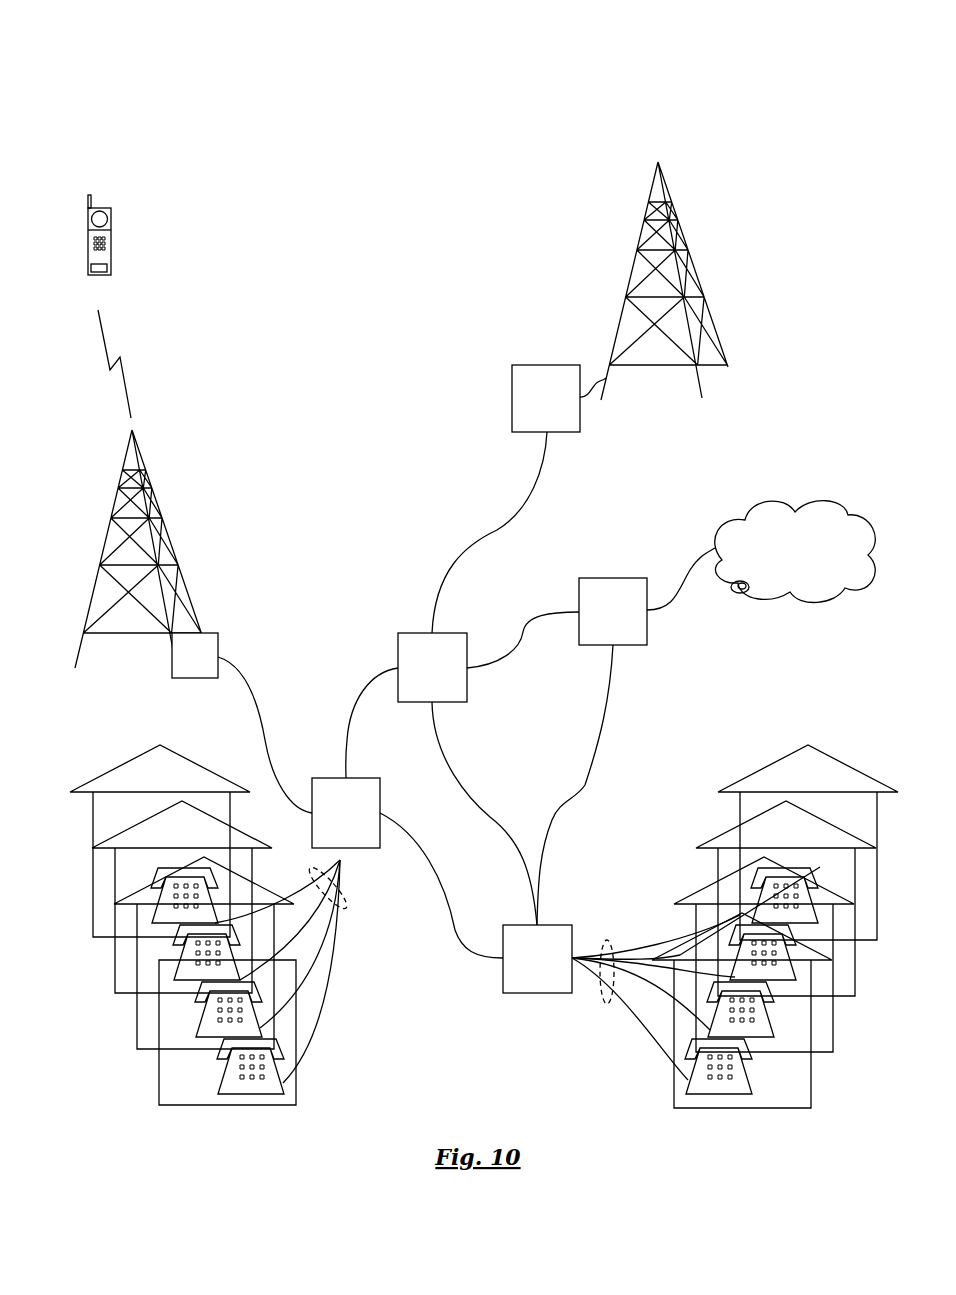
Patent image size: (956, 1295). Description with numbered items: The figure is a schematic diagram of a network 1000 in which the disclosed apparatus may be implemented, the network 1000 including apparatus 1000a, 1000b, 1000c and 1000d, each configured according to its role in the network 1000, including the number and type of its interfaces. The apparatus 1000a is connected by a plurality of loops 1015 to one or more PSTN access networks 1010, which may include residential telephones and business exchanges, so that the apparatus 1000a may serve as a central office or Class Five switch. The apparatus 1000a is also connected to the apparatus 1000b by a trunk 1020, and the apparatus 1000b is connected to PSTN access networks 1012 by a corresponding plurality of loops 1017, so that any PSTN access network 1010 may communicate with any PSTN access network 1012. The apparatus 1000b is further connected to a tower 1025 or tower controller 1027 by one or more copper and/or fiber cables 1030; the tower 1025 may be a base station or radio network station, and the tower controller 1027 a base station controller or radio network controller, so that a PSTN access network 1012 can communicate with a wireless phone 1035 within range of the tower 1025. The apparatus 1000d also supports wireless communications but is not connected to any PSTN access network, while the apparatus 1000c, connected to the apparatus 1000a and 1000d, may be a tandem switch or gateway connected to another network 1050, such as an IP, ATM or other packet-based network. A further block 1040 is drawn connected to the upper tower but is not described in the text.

The network 1000 is at (803, 62).
The wireless phone 1035 is at (112, 251).
The tower 1025 is at (100, 465).
The tower controller 1027 is at (603, 276).
The gateway node 1040 is at (559, 398).
The apparatus 1000a is at (537, 959).
The apparatus 1000b is at (407, 868).
The apparatus 1000c is at (626, 736).
The apparatus 1000d is at (462, 678).
The network 1050 is at (795, 552).
The PSTN access network 1010 is at (895, 927).
The PSTN access network 1012 is at (180, 1120).
The loops 1015 is at (608, 940).
The loops 1017 is at (345, 915).
The trunk 1020 is at (462, 938).
The cables 1030 is at (283, 693).